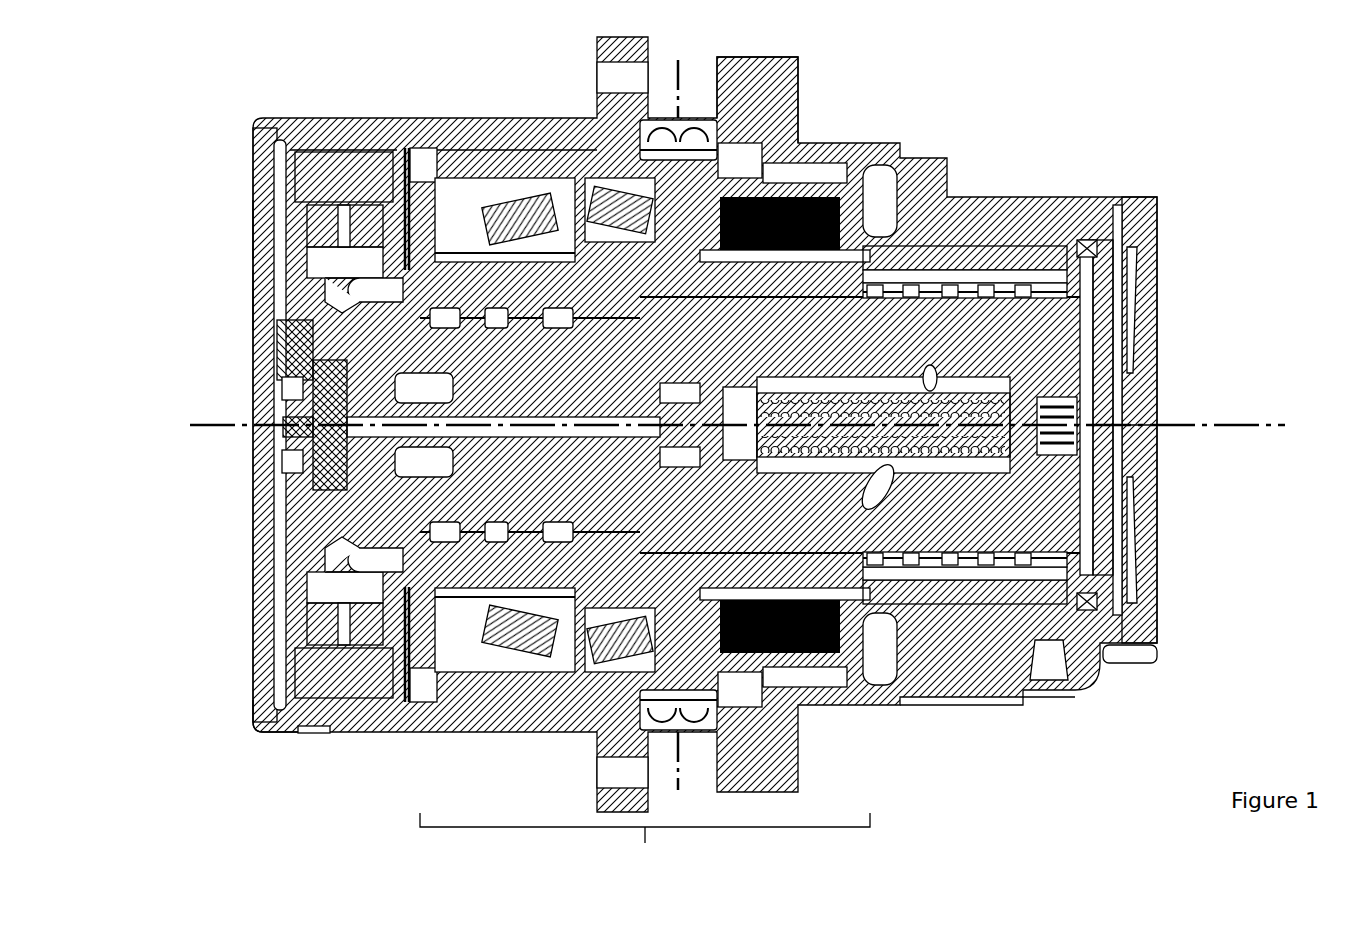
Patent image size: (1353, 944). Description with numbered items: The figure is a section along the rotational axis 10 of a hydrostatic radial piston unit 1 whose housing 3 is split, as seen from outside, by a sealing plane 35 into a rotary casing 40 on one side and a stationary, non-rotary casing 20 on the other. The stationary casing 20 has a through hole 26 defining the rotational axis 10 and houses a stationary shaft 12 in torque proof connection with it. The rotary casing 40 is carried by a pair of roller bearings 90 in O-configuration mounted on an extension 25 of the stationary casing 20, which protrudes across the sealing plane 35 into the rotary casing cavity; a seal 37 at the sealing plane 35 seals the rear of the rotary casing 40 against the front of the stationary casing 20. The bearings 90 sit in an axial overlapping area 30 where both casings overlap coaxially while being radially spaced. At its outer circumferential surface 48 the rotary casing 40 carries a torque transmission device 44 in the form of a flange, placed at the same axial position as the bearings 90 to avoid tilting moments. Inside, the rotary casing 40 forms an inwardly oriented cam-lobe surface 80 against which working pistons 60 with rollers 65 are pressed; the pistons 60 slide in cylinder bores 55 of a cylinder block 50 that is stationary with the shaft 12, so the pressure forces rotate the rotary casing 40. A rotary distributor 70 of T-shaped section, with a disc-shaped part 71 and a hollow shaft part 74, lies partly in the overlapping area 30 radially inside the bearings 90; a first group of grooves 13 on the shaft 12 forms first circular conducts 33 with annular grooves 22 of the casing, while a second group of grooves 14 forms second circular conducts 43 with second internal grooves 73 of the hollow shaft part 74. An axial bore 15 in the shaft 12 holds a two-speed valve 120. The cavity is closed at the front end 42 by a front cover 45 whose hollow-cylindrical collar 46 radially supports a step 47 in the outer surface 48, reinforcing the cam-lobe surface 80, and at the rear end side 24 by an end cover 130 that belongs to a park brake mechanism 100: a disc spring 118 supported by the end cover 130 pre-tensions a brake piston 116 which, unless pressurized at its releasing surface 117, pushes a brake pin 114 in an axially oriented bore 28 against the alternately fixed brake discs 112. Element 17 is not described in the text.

The hydrostatic radial piston unit 1 is at (1130, 125).
The housing 3 is at (813, 88).
The rotational axis 10 is at (1262, 423).
The stationary shaft 12 is at (1127, 202).
The first group of grooves 13 is at (1010, 250).
The second group of grooves 14 is at (585, 195).
The axial bore 15 is at (875, 380).
The shaft end 17 is at (290, 493).
The stationary casing 20 is at (1030, 687).
The annular grooves 22 is at (1103, 637).
The rear end side 24 is at (1160, 647).
The extension 25 is at (330, 617).
The through hole 26 is at (868, 190).
The axially oriented bore 28 is at (930, 605).
The axial overlapping area 30 is at (413, 570).
The first circular conducts 33 is at (953, 283).
The sealing plane 35 is at (683, 777).
The seal 37 is at (687, 113).
The rotary casing 40 is at (437, 143).
The front end 42 is at (255, 127).
The second circular conducts 43 is at (557, 297).
The torque transmission device 44 is at (600, 748).
The front cover 45 is at (262, 190).
The hollow-cylindrical collar 46 is at (297, 735).
The step 47 is at (323, 733).
The outer circumferential surface 48 is at (470, 117).
The cylinder block 50 is at (262, 282).
The cylinder bores 55 is at (262, 228).
The working pistons 60 is at (320, 217).
The rollers 65 is at (360, 230).
The rotary distributor 70 is at (320, 340).
The disc-shaped part 71 is at (397, 733).
The second internal grooves 73 is at (305, 372).
The hollow shaft part 74 is at (527, 277).
The cam-lobe surface 80 is at (253, 715).
The roller bearings 90 is at (513, 683).
The park brake mechanism 100 is at (1160, 322).
The brake discs 112 is at (777, 643).
The brake pin 114 is at (970, 605).
The brake piston 116 is at (1100, 517).
The releasing surface 117 is at (1125, 480).
The disc spring 118 is at (1158, 253).
The two-speed valve 120 is at (1120, 557).
The end cover 130 is at (1150, 432).